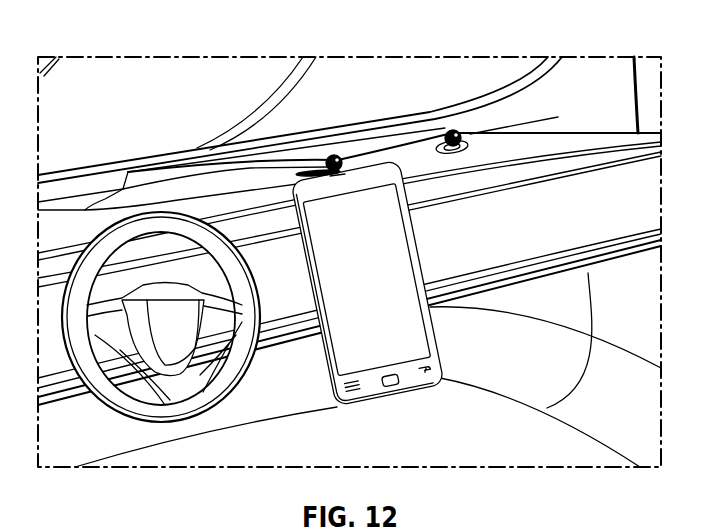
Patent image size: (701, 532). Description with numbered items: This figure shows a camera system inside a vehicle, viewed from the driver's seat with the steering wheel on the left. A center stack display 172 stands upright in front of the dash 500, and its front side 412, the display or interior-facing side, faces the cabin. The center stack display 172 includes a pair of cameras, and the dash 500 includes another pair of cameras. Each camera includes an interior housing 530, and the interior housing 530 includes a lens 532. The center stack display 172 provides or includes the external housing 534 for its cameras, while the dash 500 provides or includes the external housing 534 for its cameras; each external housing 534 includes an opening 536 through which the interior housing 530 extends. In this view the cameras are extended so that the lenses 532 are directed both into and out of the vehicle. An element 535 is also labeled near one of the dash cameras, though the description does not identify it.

The dash 500 is at (560, 40).
The interior housing 530 is at (406, 117).
The lens 532 is at (348, 144).
The external housing 534 is at (305, 176).
The second ball mount 535 is at (446, 134).
The opening 536 is at (346, 186).
The front side 412 is at (395, 280).
The center stack display 172 is at (443, 342).